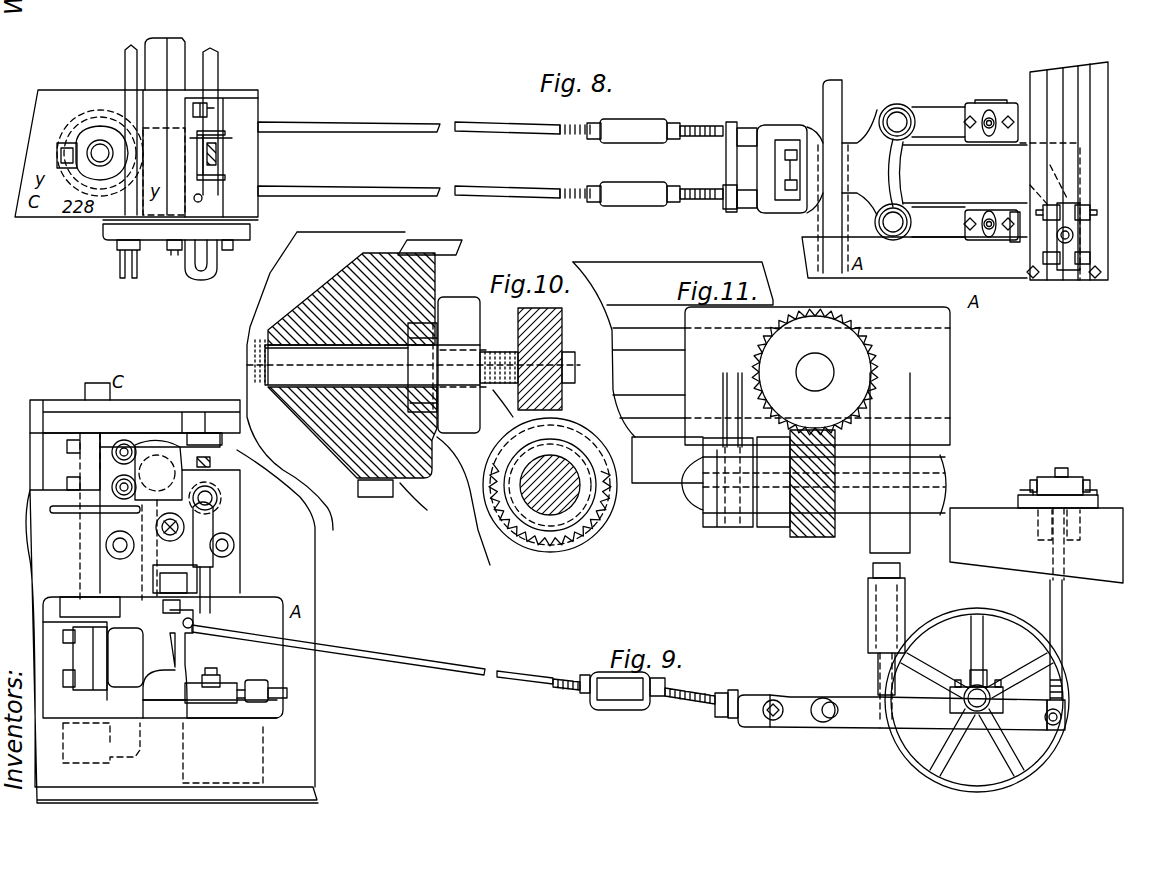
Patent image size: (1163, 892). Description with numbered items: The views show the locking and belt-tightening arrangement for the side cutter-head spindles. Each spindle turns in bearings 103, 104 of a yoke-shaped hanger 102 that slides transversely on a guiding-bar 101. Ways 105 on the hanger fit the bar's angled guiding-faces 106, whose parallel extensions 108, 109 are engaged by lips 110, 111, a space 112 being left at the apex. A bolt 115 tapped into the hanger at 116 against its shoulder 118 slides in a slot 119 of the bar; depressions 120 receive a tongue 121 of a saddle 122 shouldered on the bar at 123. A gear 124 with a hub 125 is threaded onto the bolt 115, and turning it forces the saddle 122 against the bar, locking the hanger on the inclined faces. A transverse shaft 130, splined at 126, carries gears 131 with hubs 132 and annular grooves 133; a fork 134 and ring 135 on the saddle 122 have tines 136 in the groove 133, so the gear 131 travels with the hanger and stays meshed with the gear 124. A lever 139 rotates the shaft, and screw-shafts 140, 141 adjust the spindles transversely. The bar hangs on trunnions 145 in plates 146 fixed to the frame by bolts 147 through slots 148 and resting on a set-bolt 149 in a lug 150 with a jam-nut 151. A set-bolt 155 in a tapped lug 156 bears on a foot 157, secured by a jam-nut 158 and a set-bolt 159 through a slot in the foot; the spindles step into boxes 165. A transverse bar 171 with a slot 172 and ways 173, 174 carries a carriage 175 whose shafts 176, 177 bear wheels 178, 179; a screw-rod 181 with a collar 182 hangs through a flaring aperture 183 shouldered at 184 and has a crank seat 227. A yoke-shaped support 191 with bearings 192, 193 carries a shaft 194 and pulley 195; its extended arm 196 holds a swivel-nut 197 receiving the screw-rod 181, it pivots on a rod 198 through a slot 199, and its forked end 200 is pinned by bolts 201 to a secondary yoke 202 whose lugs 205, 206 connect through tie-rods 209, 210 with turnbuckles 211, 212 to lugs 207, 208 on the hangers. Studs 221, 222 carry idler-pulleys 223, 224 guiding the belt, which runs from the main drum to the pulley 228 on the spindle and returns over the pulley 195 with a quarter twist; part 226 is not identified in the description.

In FIG. 8, the guiding-bar 101 is at (178, 60).
In FIG. 10, the guiding-bar 101 is at (440, 495).
In FIG. 9, the guiding-bar 101 is at (218, 448).
In FIG. 8, the hanger 102 is at (112, 108).
In FIG. 10, the hanger 102 is at (441, 398).
In FIG. 9, the hanger 102 is at (127, 653).
In FIG. 8, the bearing 103 is at (68, 143).
In FIG. 9, the bearing 103 is at (60, 470).
In FIG. 9, the bearing 104 is at (88, 650).
In FIG. 10, the ways 105 is at (353, 258).
In FIG. 9, the ways 105 is at (160, 430).
In FIG. 10, the guiding-faces 106 is at (335, 300).
In FIG. 10, the parallel extension 108 is at (398, 250).
In FIG. 9, the parallel extension 108 is at (190, 417).
In FIG. 10, the parallel extension 109 is at (378, 492).
In FIG. 11, the parallel extension 109 is at (642, 270).
In FIG. 10, the lip 110 is at (430, 250).
In FIG. 10, the lip 111 is at (377, 491).
In FIG. 10, the space 112 is at (280, 330).
In FIG. 10, the bolt 115 is at (263, 350).
In FIG. 11, the bolt 115 is at (815, 372).
In FIG. 9, the bolt 115 is at (155, 450).
In FIG. 10, the tapped point 116 is at (250, 340).
In FIG. 9, the shoulder 118 is at (240, 402).
In FIG. 10, the slot 119 is at (375, 400).
In FIG. 10, the depressions 120 is at (437, 339).
In FIG. 10, the tongue 121 is at (465, 315).
In FIG. 10, the saddle 122 is at (438, 340).
In FIG. 11, the saddle 122 is at (722, 400).
In FIG. 10, the shoulder 123 is at (442, 297).
In FIG. 8, the gear 124 is at (225, 172).
In FIG. 10, the gear 124 is at (565, 345).
In FIG. 11, the gear 124 is at (815, 372).
In FIG. 10, the hub 125 is at (499, 357).
In FIG. 10, the spline 126 is at (593, 460).
In FIG. 11, the spline 126 is at (945, 493).
In FIG. 8, the shaft 130 is at (218, 70).
In FIG. 10, the shaft 130 is at (575, 480).
In FIG. 11, the shaft 130 is at (928, 478).
In FIG. 9, the shaft 130 is at (212, 495).
In FIG. 8, the gear 131 is at (222, 150).
In FIG. 10, the gear 131 is at (590, 508).
In FIG. 11, the gear 131 is at (805, 538).
In FIG. 10, the extended hub 132 is at (542, 555).
In FIG. 11, the extended hub 132 is at (777, 528).
In FIG. 11, the annular groove 133 is at (708, 520).
In FIG. 10, the fork 134 is at (560, 428).
In FIG. 11, the fork 134 is at (730, 445).
In FIG. 10, the ring 135 is at (582, 548).
In FIG. 11, the ring 135 is at (891, 463).
In FIG. 10, the tines 136 is at (585, 452).
In FIG. 11, the tines 136 is at (738, 420).
In FIG. 8, the lever 139 is at (200, 262).
In FIG. 9, the lever 139 is at (213, 525).
In FIG. 9, the screw-shaft 140 is at (106, 512).
In FIG. 8, the screw-shaft 141 is at (131, 44).
In FIG. 9, the screw-shaft 141 is at (128, 440).
In FIG. 8, the trunnions 145 is at (165, 237).
In FIG. 10, the trunnions 145 is at (412, 492).
In FIG. 8, the plates 146 is at (252, 226).
In FIG. 9, the plates 146 is at (235, 563).
In FIG. 8, the bolts 147 is at (172, 265).
In FIG. 10, the bolts 147 is at (251, 294).
In FIG. 9, the bolts 147 is at (234, 547).
In FIG. 9, the slots 148 is at (234, 540).
In FIG. 9, the set-bolt 149 is at (200, 615).
In FIG. 9, the lug 150 is at (261, 619).
In FIG. 9, the jam-nut 151 is at (197, 600).
In FIG. 9, the set-bolt 155 is at (291, 684).
In FIG. 9, the tapped lug 156 is at (258, 680).
In FIG. 9, the foot 157 is at (190, 682).
In FIG. 9, the jam-nut 158 is at (270, 705).
In FIG. 9, the set-bolt 159 is at (216, 678).
In FIG. 9, the boxes 165 is at (90, 740).
In FIG. 8, the transverse bar 171 is at (1076, 171).
In FIG. 9, the transverse bar 171 is at (1100, 505).
In FIG. 8, the slot 172 is at (1070, 75).
In FIG. 9, the slot 172 is at (1033, 518).
In FIG. 8, the way 173 is at (1052, 75).
In FIG. 9, the way 173 is at (1040, 480).
In FIG. 8, the way 174 is at (1085, 65).
In FIG. 9, the way 174 is at (1093, 490).
In FIG. 8, the carriage 175 is at (1092, 203).
In FIG. 9, the carriage 175 is at (1080, 477).
In FIG. 8, the shaft 176 is at (1092, 258).
In FIG. 9, the shaft 176 is at (1098, 478).
In FIG. 8, the shaft 177 is at (1092, 210).
In FIG. 8, the wheel 178 is at (1088, 280).
In FIG. 9, the wheel 178 is at (1045, 477).
In FIG. 8, the wheel 179 is at (1030, 182).
In FIG. 8, the screw-rod 181 is at (1087, 235).
In FIG. 9, the screw-rod 181 is at (1063, 630).
In FIG. 9, the collar 182 is at (1062, 468).
In FIG. 9, the aperture 183 is at (1050, 537).
In FIG. 9, the shoulder 184 is at (1087, 515).
In FIG. 8, the support 191 is at (879, 173).
In FIG. 9, the support 191 is at (870, 728).
In FIG. 8, the bearing 192 is at (972, 243).
In FIG. 9, the bearing 192 is at (960, 690).
In FIG. 8, the bearing 193 is at (967, 108).
In FIG. 8, the shaft 194 is at (990, 100).
In FIG. 9, the shaft 194 is at (996, 688).
In FIG. 8, the pulley 195 is at (965, 174).
In FIG. 9, the pulley 195 is at (975, 608).
In FIG. 8, the extended arm 196 is at (1018, 240).
In FIG. 9, the extended arm 196 is at (1036, 715).
In FIG. 9, the swivel-nut 197 is at (1062, 725).
In FIG. 8, the transverse rod 198 is at (847, 112).
In FIG. 9, the transverse rod 198 is at (826, 698).
In FIG. 8, the slot 199 is at (852, 205).
In FIG. 9, the slot 199 is at (840, 705).
In FIG. 8, the forked end 200 is at (800, 127).
In FIG. 9, the forked end 200 is at (793, 728).
In FIG. 8, the bolts 201 is at (795, 165).
In FIG. 9, the bolts 201 is at (772, 722).
In FIG. 8, the secondary yoke 202 is at (772, 168).
In FIG. 9, the secondary yoke 202 is at (755, 693).
In FIG. 8, the lug 205 is at (733, 210).
In FIG. 9, the lug 205 is at (730, 720).
In FIG. 8, the lug 206 is at (740, 125).
In FIG. 8, the lug 207 is at (205, 208).
In FIG. 9, the lug 207 is at (190, 632).
In FIG. 8, the lug 208 is at (215, 105).
In FIG. 8, the tie-rod 209 is at (505, 196).
In FIG. 9, the tie-rod 209 is at (460, 676).
In FIG. 8, the tie-rod 210 is at (432, 124).
In FIG. 8, the turnbuckle 211 is at (652, 204).
In FIG. 9, the turnbuckle 211 is at (635, 710).
In FIG. 8, the turnbuckle 212 is at (652, 140).
In FIG. 8, the stud 221 is at (893, 242).
In FIG. 9, the stud 221 is at (872, 580).
In FIG. 8, the stud 222 is at (897, 112).
In FIG. 8, the idler-pulley 223 is at (911, 226).
In FIG. 9, the idler-pulley 223 is at (868, 608).
In FIG. 8, the idler-pulley 224 is at (915, 124).
In FIG. 9, the base 226 is at (43, 620).
In FIG. 9, the seat 227 is at (1064, 468).
In FIG. 9, the pulley 228 is at (90, 607).